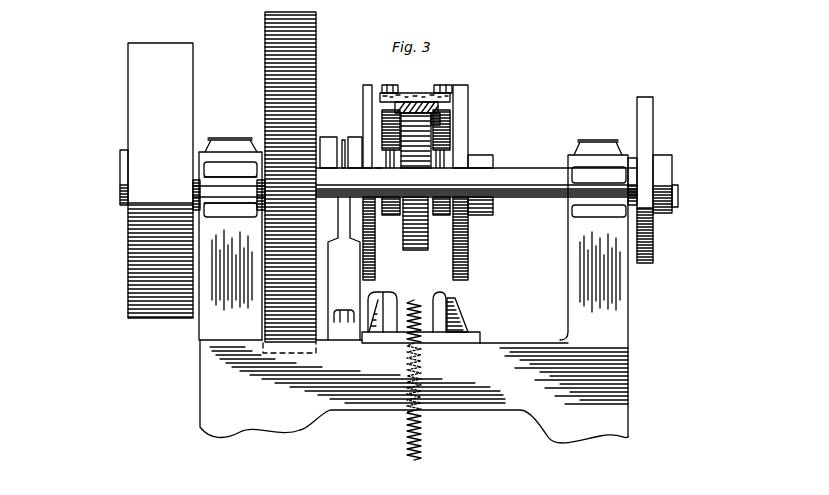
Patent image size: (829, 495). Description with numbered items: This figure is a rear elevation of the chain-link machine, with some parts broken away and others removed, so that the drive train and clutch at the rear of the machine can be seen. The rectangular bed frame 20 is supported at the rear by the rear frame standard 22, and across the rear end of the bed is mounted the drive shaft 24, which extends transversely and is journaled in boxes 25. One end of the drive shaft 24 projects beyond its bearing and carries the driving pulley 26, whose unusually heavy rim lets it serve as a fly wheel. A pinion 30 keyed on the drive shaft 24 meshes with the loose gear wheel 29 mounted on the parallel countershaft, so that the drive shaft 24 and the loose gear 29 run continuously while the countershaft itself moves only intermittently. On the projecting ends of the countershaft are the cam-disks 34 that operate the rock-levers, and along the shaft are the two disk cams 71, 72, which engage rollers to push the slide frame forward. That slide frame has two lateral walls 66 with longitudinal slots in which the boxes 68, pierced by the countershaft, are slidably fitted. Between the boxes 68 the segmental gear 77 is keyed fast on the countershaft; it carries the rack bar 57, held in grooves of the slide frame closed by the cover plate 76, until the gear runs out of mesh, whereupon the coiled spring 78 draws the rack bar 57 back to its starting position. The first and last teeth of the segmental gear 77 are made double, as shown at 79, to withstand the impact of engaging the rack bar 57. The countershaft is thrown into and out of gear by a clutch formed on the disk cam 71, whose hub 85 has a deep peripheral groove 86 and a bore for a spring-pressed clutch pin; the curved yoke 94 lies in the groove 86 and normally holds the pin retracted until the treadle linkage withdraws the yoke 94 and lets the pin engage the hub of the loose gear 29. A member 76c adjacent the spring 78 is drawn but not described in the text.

The bed frame 20 is at (212, 325).
The rear frame standard 22 is at (508, 357).
The drive shaft 24 is at (522, 176).
The boxes 25 is at (229, 143).
The driving pulley 26 is at (135, 258).
The loose gear wheel 29 is at (278, 60).
The pinion 30 is at (287, 190).
The cam-disks 34 is at (655, 115).
The rack bar 57 is at (455, 104).
The lateral walls 66 is at (385, 124).
The blocks or boxes 68 is at (432, 220).
The disk cam 71 is at (362, 265).
The disk cam 72 is at (430, 238).
The cover plate 76 is at (418, 103).
The cam block 76c is at (448, 316).
The segmental gear 77 is at (418, 240).
The coiled spring 78 is at (407, 432).
The double teeth 79 is at (423, 123).
The hub 85 is at (325, 137).
The peripheral groove 86 is at (343, 140).
The yoke 94 is at (352, 204).